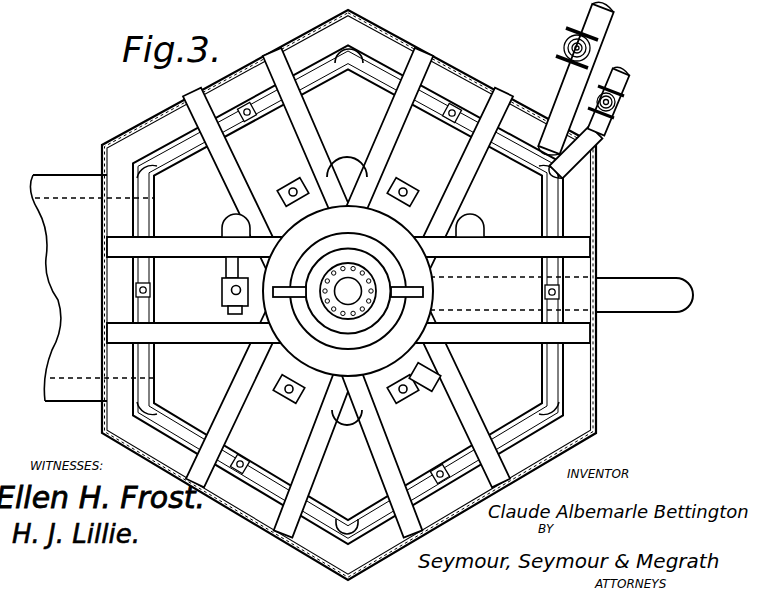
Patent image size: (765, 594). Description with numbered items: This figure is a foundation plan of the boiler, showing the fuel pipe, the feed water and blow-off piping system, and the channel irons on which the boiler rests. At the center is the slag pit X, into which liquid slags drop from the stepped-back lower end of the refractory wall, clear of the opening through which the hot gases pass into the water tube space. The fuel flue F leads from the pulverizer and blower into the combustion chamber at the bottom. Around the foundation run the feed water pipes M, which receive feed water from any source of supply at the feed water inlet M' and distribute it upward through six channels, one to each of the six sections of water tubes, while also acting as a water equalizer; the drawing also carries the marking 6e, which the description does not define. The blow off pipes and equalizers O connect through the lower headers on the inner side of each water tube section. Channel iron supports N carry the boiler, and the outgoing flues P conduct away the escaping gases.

The feed water pipes M is at (374, 295).
The feed water inlet M' is at (596, 78).
The channel iron supports N is at (230, 158).
The outgoing flues P is at (271, 258).
The blow off pipes and equalizers O is at (230, 262).
The slag pit X is at (350, 291).
The fuel flue F is at (478, 291).
The bolts 6e is at (490, 52).